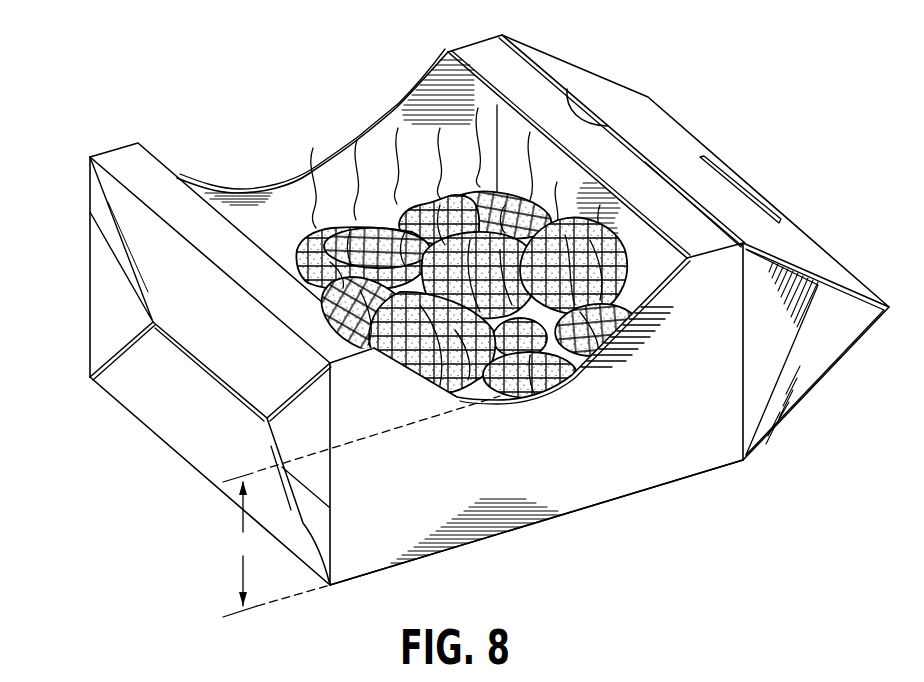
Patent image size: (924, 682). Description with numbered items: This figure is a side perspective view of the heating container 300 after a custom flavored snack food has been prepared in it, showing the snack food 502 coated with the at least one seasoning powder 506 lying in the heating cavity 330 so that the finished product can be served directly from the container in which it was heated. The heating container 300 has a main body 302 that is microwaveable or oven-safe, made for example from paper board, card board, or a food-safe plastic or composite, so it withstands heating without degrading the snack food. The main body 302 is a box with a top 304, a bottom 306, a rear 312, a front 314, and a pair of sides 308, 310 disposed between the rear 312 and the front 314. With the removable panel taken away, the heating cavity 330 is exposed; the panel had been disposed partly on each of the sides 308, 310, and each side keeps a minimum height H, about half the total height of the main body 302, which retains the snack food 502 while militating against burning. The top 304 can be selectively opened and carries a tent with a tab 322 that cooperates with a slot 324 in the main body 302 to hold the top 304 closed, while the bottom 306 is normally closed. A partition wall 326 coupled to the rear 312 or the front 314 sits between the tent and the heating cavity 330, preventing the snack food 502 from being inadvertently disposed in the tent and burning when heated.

The heating container 300 is at (681, 84).
The main body 302 is at (693, 410).
The top 304 is at (791, 206).
The bottom 306 is at (157, 274).
The side 308 is at (663, 451).
The side 310 is at (79, 169).
The rear 312 is at (137, 158).
The front 314 is at (563, 531).
The tab 322 is at (616, 128).
The slot 324 is at (567, 88).
The partition wall 326 is at (512, 147).
The heating cavity 330 is at (272, 217).
The snack food 502 is at (528, 390).
The seasoning powder 506 is at (498, 379).